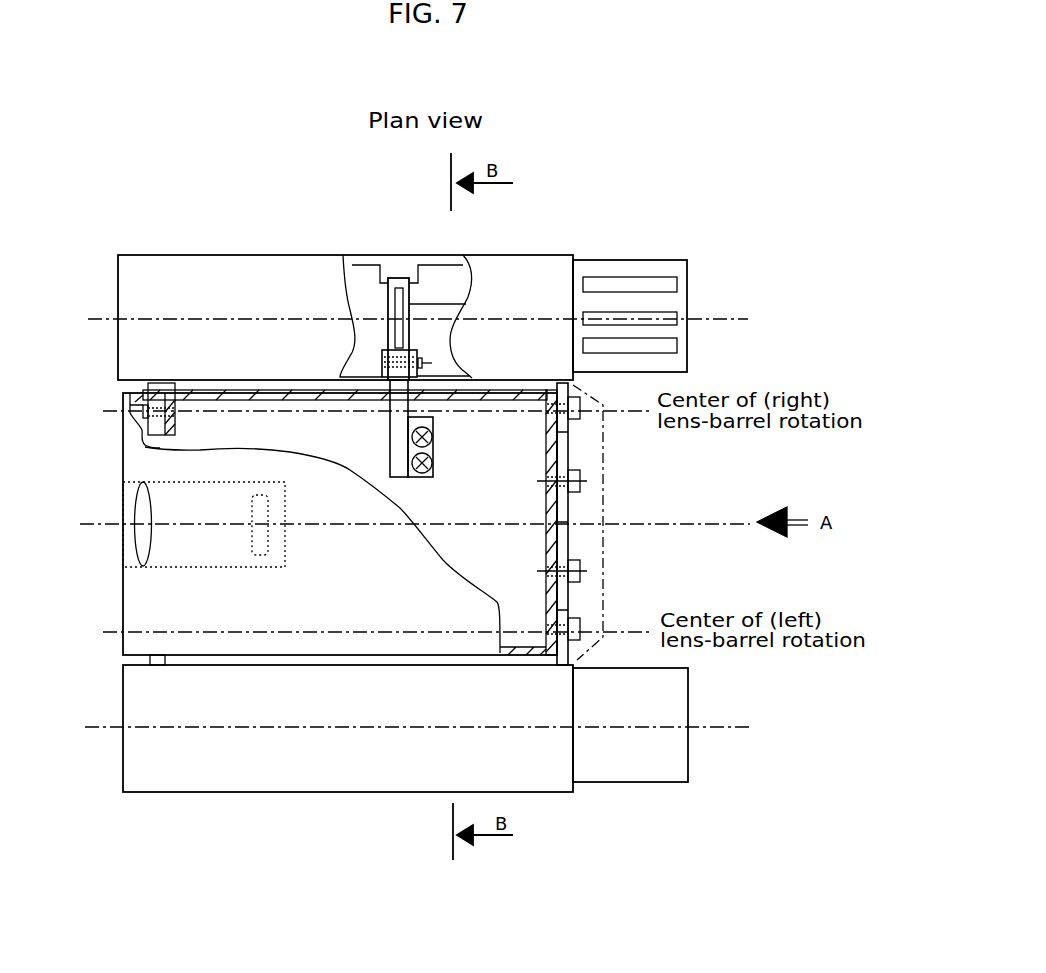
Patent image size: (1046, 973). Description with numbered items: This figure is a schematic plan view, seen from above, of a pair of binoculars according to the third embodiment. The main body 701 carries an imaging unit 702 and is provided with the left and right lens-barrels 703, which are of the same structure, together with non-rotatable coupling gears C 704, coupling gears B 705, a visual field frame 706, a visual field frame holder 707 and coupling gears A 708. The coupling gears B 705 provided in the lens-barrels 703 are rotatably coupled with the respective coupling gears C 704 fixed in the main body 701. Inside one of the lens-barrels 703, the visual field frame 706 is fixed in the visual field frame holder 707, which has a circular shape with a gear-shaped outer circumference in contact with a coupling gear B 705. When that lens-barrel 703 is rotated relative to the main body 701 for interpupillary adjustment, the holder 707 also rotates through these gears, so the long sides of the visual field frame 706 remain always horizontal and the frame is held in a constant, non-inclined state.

The main body 701 is at (150, 603).
The imaging unit 702 is at (127, 495).
The lens-barrel 703 is at (170, 272).
The coupling gear C 704 is at (398, 395).
The coupling gear B 705 is at (382, 363).
The visual field frame 706 is at (397, 303).
The visual field frame holder 707 is at (466, 304).
The coupling gear A 708 is at (570, 460).